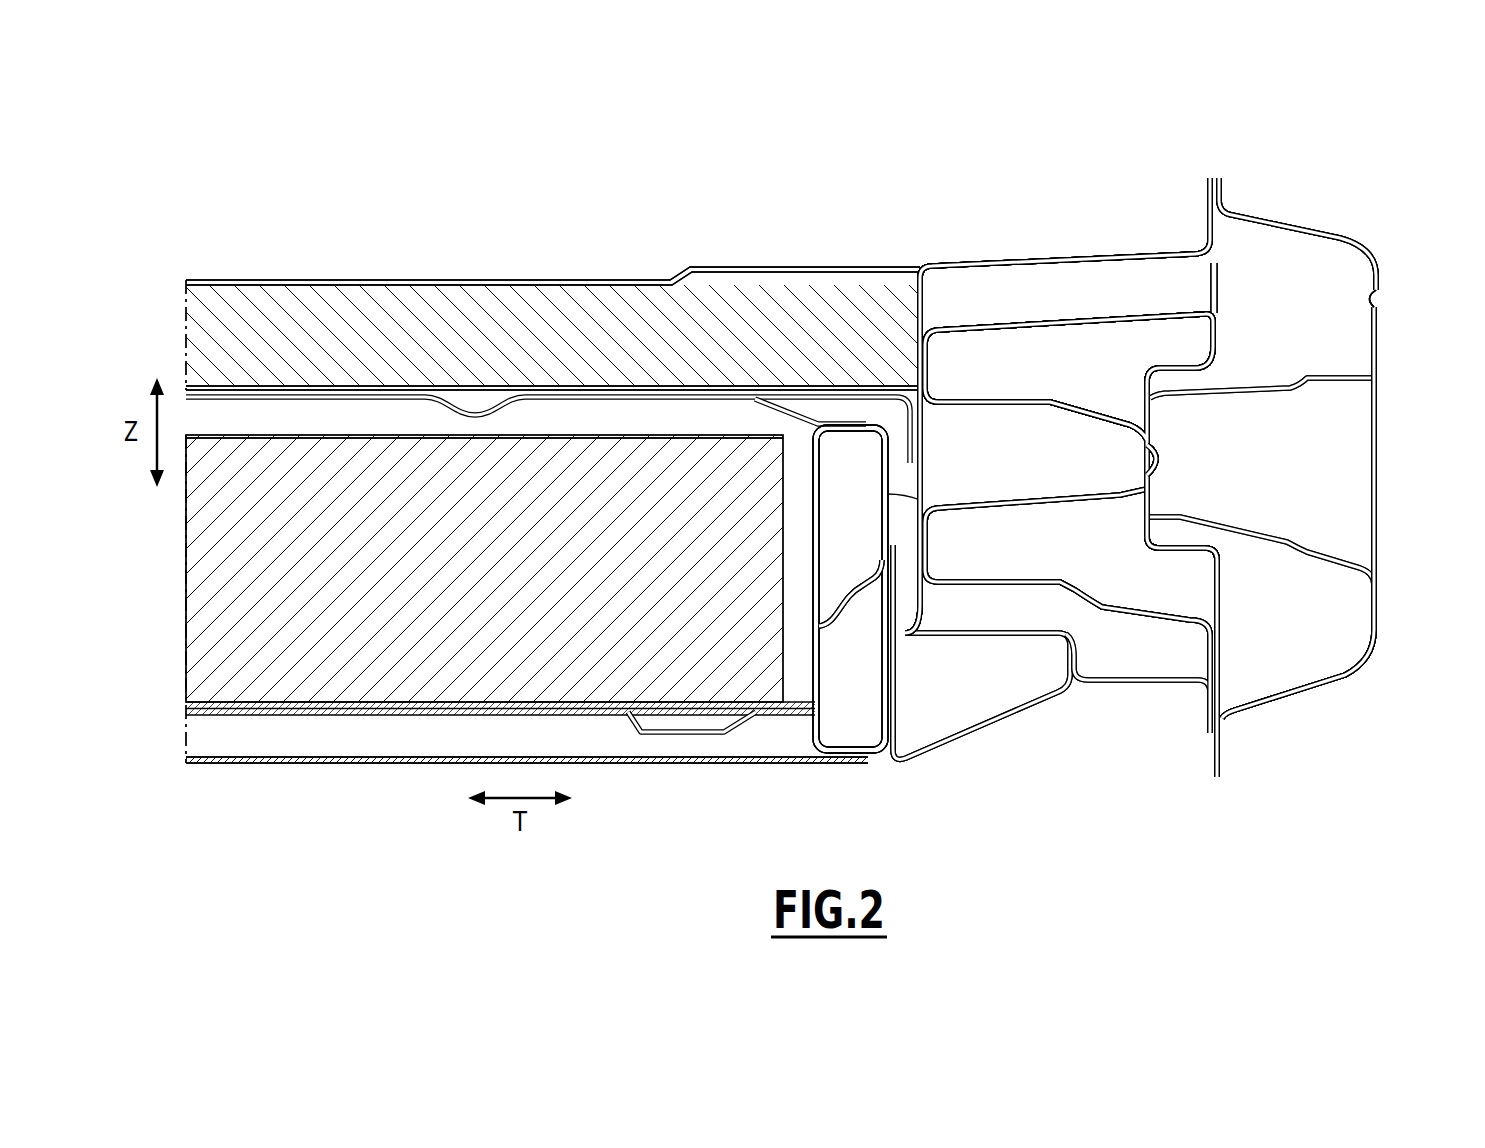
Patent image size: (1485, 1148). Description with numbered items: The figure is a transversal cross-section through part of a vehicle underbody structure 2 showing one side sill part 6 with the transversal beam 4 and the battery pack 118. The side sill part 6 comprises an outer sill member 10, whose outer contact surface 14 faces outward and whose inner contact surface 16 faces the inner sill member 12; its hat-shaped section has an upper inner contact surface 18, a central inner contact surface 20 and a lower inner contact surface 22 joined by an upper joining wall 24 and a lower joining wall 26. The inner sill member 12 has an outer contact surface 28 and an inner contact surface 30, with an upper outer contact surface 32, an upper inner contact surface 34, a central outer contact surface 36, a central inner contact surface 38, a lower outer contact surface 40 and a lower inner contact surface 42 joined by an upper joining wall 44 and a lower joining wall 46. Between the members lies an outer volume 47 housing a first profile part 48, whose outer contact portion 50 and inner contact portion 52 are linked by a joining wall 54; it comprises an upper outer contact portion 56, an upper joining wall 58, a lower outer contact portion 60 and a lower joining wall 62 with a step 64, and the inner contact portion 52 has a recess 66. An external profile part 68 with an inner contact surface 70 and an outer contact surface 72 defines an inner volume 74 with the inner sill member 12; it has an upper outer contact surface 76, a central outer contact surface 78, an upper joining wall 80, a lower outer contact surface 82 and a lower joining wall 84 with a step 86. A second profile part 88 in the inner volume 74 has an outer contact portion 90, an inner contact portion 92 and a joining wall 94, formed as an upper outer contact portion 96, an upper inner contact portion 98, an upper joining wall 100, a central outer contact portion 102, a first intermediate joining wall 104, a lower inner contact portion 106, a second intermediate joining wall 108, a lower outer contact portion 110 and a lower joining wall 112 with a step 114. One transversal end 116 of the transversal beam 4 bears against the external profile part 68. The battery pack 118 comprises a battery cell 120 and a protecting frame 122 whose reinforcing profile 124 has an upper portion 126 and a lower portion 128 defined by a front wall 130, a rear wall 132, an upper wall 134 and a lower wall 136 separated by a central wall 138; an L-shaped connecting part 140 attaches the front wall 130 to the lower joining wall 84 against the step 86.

The vehicle underbody structure 2 is at (521, 200).
The side sill part 6 is at (1092, 171).
The transversal beam 4 is at (440, 300).
The battery cell 120 is at (212, 624).
The battery pack 118 is at (314, 730).
The upper wall 134 is at (852, 430).
The longitudinal reinforcing profile 124 is at (818, 508).
The upper portion 126 is at (818, 470).
The rear wall 132 is at (816, 580).
The central wall 138 is at (851, 610).
The lower portion 128 is at (826, 690).
The protecting frame 122 is at (833, 728).
The lower wall 136 is at (857, 756).
The lower inner contact portion 106 is at (927, 560).
The connecting part 140 is at (975, 733).
The central outer contact surface 78 is at (930, 470).
The front wall 130 is at (925, 497).
The second intermediate joining wall 108 is at (1005, 507).
The lower joining wall 84 is at (966, 632).
The lower joining wall 112 is at (995, 582).
The central outer contact surface 36 is at (1118, 523).
The step 114 is at (1085, 597).
The step 86 is at (1076, 650).
The lower outer contact portion 110 is at (1220, 655).
The first intermediate joining wall 104 is at (982, 402).
The joining wall 94 is at (1071, 527).
The upper joining wall 100 is at (996, 330).
The second profile part 88 is at (1064, 327).
The central outer contact portion 102 is at (1143, 430).
The inner contact portion 52 is at (1130, 436).
The recess 66 is at (1160, 460).
The lower joining wall 62 is at (1225, 520).
The step 64 is at (1304, 540).
The joining wall 54 is at (1261, 369).
The upper joining wall 58 is at (1232, 393).
The central inner contact surface 38 is at (1140, 525).
The lower outer contact surface 40 is at (1218, 620).
The lower joining wall 46 is at (1178, 550).
The lower inner contact surface 42 is at (1213, 600).
The lower outer contact surface 82 is at (1222, 712).
The lower inner contact surface 22 is at (1220, 752).
The lower joining wall 26 is at (1312, 686).
The lower outer contact portion 60 is at (1378, 605).
The outer volume 47 is at (1350, 503).
The central inner contact surface 20 is at (1378, 435).
The first profile part 48 is at (1376, 378).
The outer contact portion 50 is at (1346, 512).
The upper outer contact portion 56 is at (1378, 332).
The outer contact surface 14 is at (1378, 300).
The inner contact surface 16 is at (1371, 290).
The outer sill member 10 is at (1340, 238).
The upper joining wall 24 is at (1298, 228).
The inner sill member 12 is at (1258, 205).
The upper inner contact surface 18 is at (1228, 200).
The upper outer contact surface 76 is at (1212, 178).
The upper outer contact surface 32 is at (1222, 268).
The outer contact portion 90 is at (1277, 288).
The upper outer contact portion 96 is at (1222, 290).
The outer contact surface 28 is at (1222, 330).
The upper joining wall 44 is at (1180, 362).
The inner contact surface 30 is at (1200, 355).
The upper inner contact surface 34 is at (1215, 350).
The upper joining wall 80 is at (1078, 252).
The inner volume 74 is at (1038, 256).
The external profile part 68 is at (990, 262).
The inner contact surface 70 is at (940, 300).
The transversal end 116 is at (903, 300).
The outer contact surface 72 is at (888, 300).
The inner contact portion 92 is at (990, 405).
The upper inner contact portion 98 is at (905, 315).